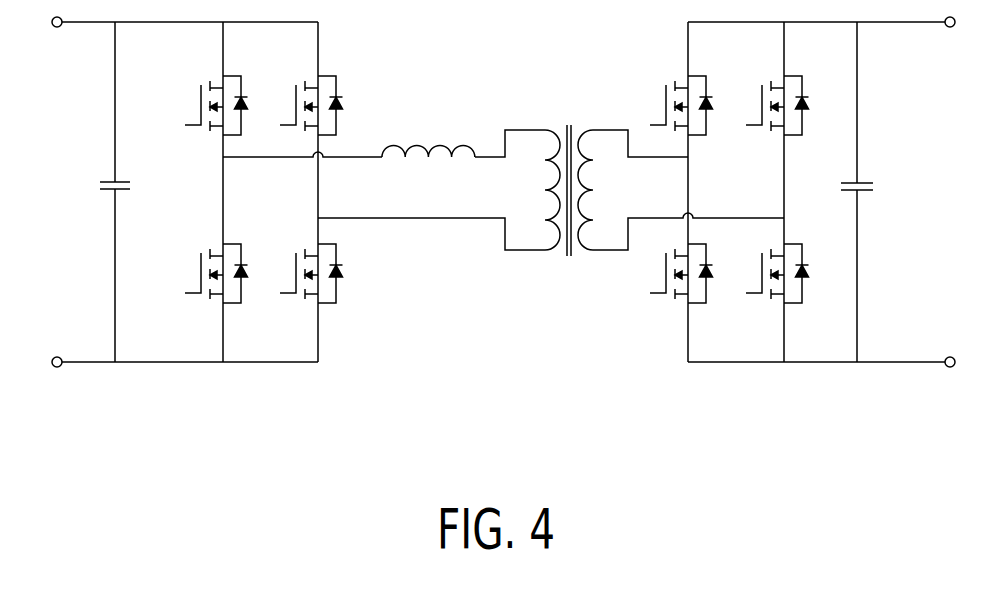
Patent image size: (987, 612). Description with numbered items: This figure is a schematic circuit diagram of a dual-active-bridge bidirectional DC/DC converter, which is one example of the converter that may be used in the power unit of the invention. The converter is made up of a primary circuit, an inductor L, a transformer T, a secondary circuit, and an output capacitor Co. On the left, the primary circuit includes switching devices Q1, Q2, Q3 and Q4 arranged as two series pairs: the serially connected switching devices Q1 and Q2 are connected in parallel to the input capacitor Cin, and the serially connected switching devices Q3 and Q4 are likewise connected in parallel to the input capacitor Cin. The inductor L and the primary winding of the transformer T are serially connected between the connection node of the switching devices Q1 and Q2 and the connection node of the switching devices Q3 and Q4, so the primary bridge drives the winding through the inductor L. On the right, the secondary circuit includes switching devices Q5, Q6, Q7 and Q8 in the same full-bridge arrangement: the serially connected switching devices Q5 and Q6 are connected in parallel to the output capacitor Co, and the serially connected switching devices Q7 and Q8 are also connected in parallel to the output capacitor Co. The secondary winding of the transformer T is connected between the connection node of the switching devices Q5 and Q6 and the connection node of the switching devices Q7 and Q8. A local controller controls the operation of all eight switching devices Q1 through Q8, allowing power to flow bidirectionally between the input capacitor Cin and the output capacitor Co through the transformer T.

The switching device Q1 is at (204, 105).
The switching device Q2 is at (205, 273).
The switching device Q3 is at (299, 105).
The switching device Q4 is at (301, 273).
The switching device Q5 is at (671, 105).
The switching device Q6 is at (671, 273).
The switching device Q7 is at (766, 105).
The switching device Q8 is at (766, 273).
The input capacitor Cin is at (92, 192).
The output capacitor Co is at (839, 192).
The inductor L is at (428, 133).
The transformer T is at (569, 172).